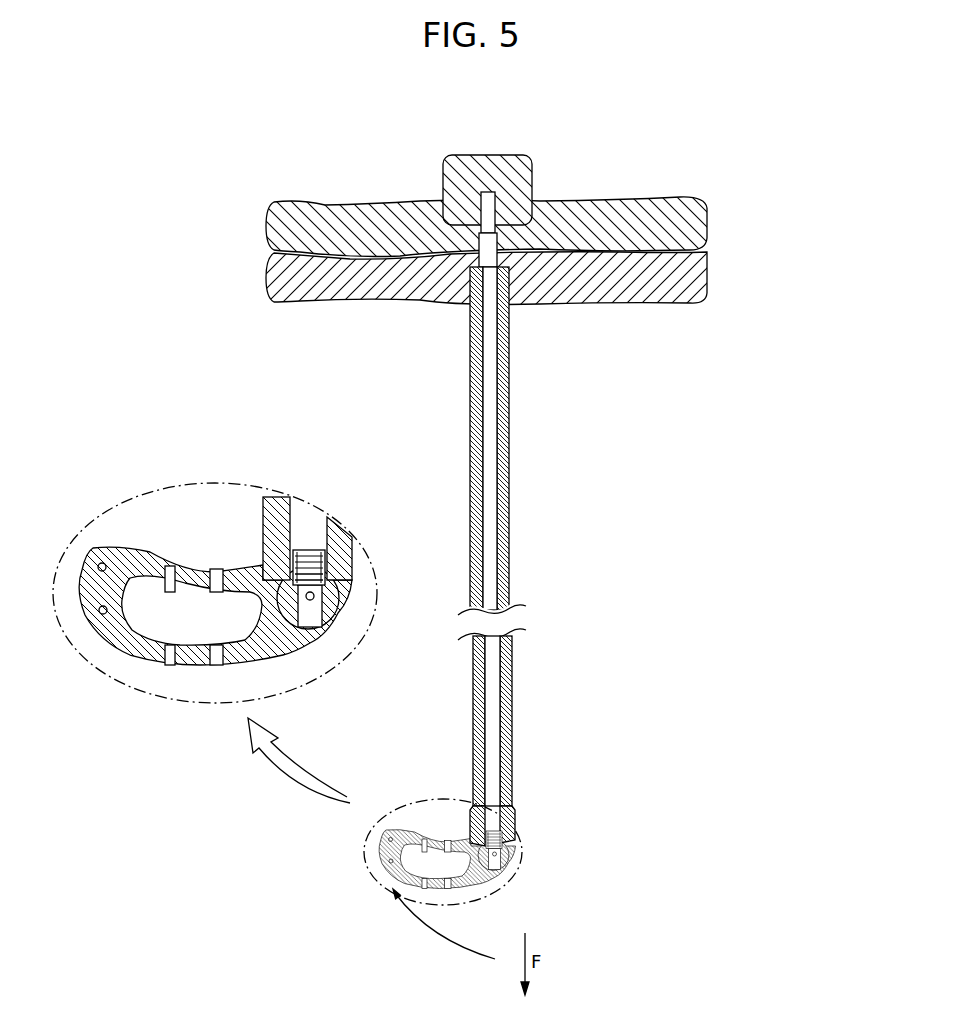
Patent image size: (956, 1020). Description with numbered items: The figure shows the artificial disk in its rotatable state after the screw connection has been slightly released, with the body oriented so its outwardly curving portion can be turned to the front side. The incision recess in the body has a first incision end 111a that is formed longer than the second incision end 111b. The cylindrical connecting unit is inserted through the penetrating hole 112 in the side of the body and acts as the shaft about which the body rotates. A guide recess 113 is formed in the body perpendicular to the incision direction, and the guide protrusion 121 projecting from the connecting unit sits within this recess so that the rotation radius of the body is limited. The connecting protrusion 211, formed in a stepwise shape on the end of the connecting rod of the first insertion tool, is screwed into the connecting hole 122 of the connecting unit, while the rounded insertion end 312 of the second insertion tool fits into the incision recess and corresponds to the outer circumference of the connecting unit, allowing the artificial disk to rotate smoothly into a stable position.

The first incision end 111a is at (473, 836).
The second incision end 111b is at (503, 875).
The penetrating hole 112 is at (337, 610).
The guide recess 113 is at (283, 623).
The guide protrusion 121 is at (298, 632).
The connecting hole 122 is at (322, 572).
The connecting protrusion 211 is at (303, 552).
The insertion end 312 is at (513, 847).